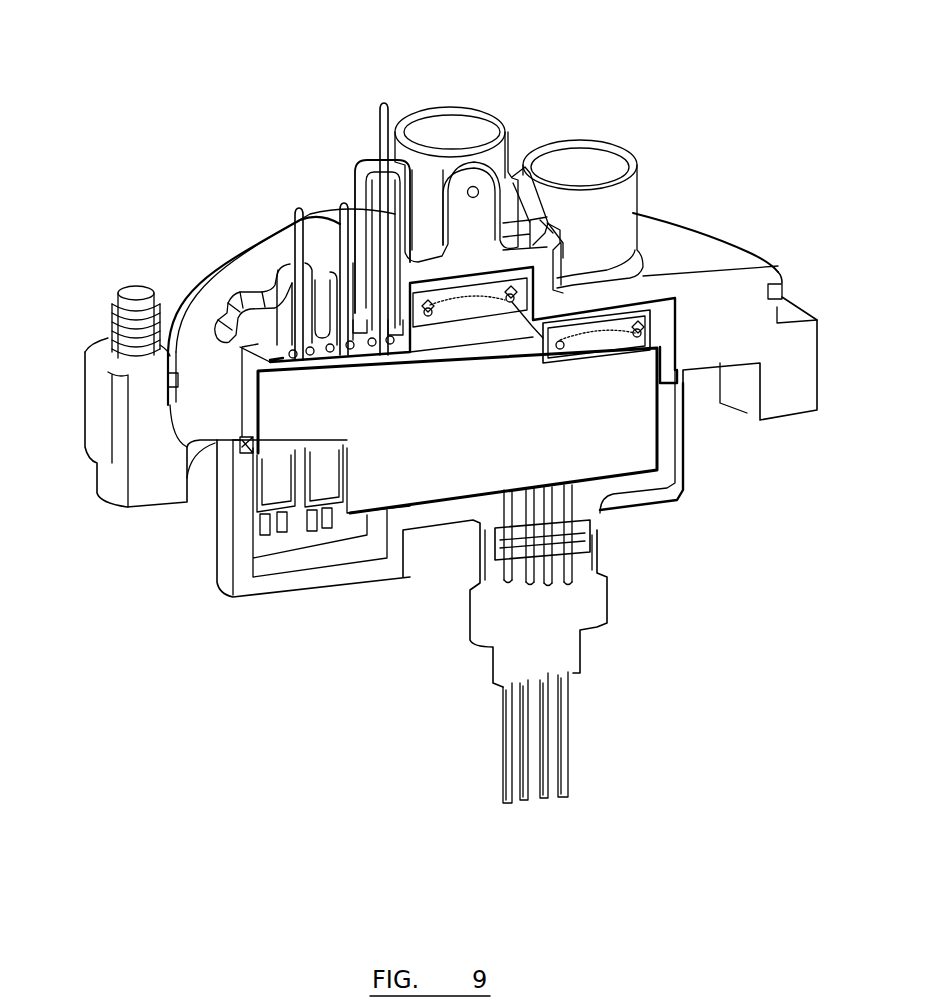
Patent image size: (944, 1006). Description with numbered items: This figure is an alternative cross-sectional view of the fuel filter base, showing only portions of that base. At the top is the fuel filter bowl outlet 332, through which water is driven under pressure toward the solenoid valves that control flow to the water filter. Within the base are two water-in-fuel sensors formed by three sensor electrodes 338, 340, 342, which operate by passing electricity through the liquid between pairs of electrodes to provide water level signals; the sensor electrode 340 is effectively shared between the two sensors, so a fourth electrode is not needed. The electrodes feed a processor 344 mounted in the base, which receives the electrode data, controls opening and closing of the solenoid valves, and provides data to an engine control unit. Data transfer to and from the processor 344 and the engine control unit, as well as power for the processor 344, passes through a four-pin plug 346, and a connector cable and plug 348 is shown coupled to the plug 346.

The fuel filter bowl outlet 332 is at (694, 163).
The sensor electrode 338 is at (380, 117).
The sensor electrode 340 is at (340, 207).
The sensor electrode 342 is at (298, 217).
The processor 344 is at (511, 432).
The 4-pin plug 346 is at (570, 510).
The connector cable and plug 348 is at (563, 640).